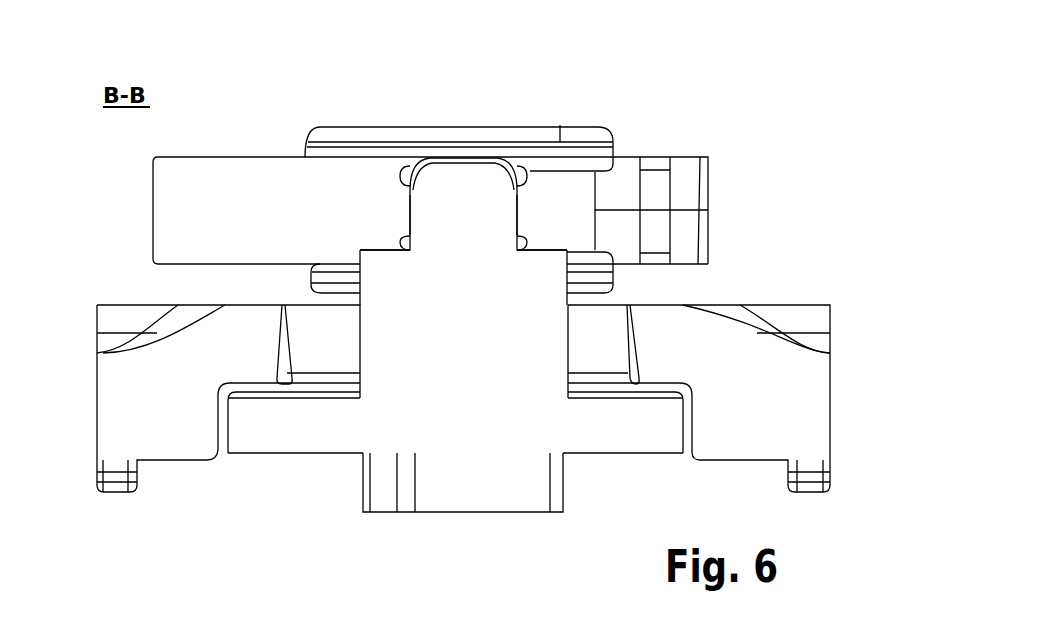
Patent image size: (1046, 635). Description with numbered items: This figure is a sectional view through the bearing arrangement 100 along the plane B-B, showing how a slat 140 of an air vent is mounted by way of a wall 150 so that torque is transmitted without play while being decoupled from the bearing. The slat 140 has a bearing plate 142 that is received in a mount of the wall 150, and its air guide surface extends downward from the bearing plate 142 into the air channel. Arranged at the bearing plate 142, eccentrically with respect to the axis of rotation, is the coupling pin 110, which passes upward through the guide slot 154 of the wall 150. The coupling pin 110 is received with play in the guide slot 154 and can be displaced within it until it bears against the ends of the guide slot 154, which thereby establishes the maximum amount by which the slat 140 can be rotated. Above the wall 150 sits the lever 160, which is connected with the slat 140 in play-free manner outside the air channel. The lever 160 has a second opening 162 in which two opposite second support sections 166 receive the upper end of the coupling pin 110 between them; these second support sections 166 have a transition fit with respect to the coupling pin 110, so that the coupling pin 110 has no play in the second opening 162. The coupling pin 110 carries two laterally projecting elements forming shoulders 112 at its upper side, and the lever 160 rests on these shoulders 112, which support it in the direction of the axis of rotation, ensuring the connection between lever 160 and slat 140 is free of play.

The bearing arrangement 100 is at (790, 96).
The coupling pin 110 is at (472, 188).
The shoulder 112 is at (377, 255).
The slat 140 is at (387, 527).
The bearing plate 142 is at (273, 427).
The wall 150 is at (795, 407).
The guide slot 154 is at (317, 347).
The lever 160 is at (220, 157).
The second opening 162 is at (405, 175).
The second support section 166 is at (405, 208).